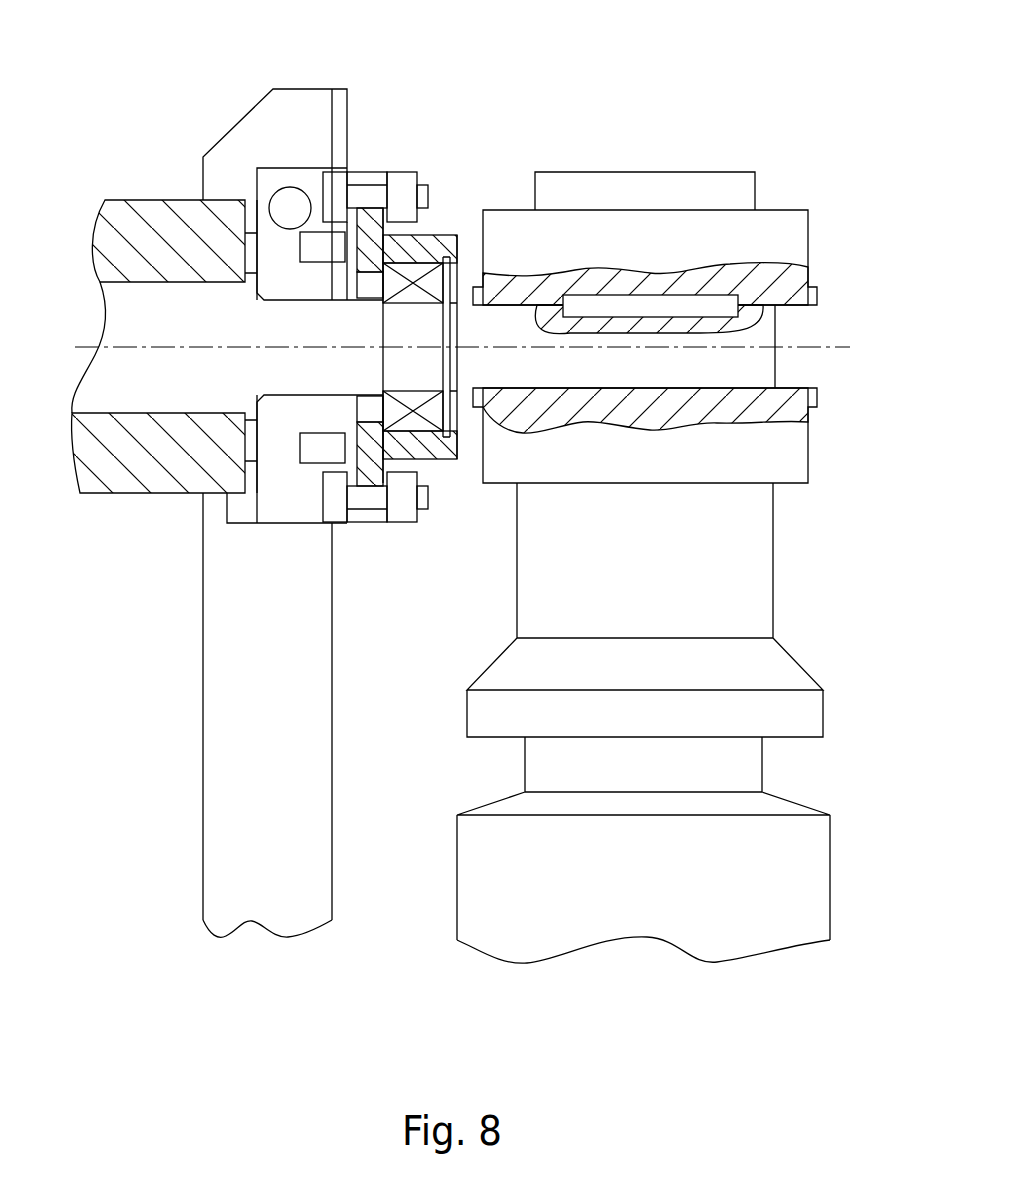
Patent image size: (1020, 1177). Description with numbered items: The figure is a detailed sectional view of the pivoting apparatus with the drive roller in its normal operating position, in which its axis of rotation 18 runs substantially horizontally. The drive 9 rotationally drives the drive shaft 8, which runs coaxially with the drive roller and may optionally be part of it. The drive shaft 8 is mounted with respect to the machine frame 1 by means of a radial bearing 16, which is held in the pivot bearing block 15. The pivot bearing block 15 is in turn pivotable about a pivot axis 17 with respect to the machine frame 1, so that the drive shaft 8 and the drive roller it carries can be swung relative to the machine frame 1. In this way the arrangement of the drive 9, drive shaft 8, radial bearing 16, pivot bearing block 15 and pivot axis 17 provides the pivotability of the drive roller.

The machine frame 1 is at (267, 738).
The drive shaft 8 is at (752, 357).
The drive 9 is at (723, 665).
The pivot bearing block 15 is at (429, 438).
The radial bearing 16 is at (412, 290).
The pivot axis 17 is at (290, 207).
The axis of rotation 18 is at (137, 318).